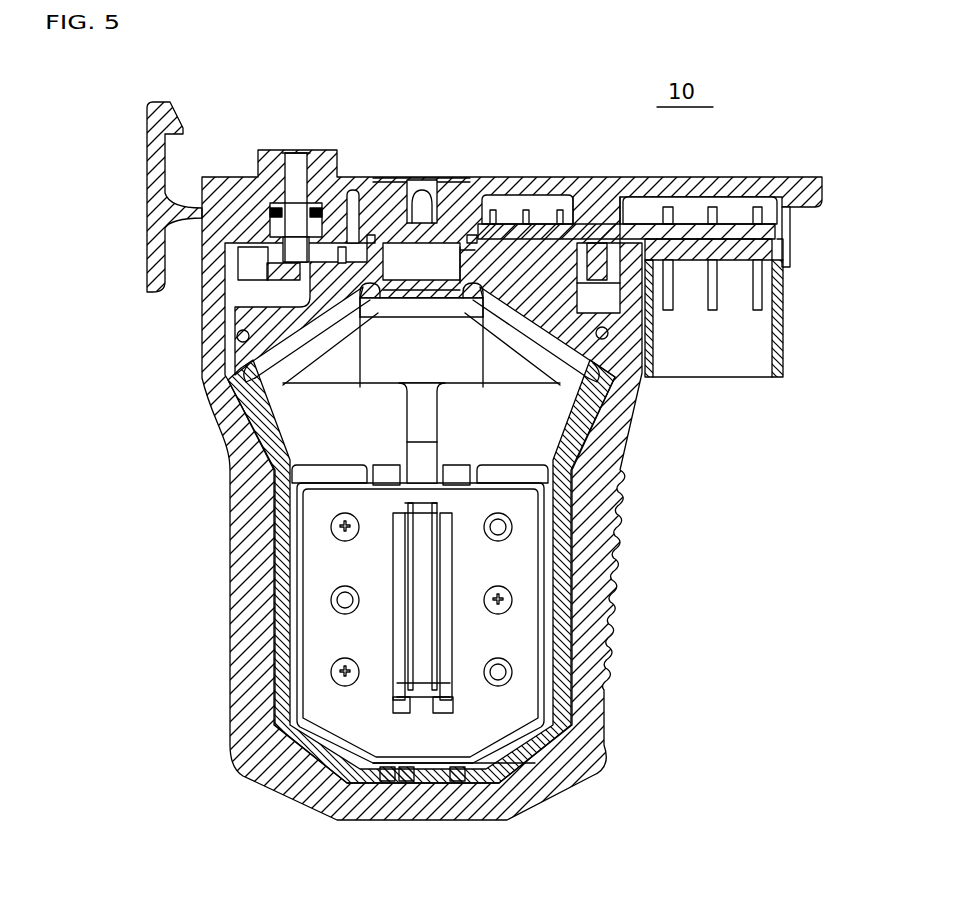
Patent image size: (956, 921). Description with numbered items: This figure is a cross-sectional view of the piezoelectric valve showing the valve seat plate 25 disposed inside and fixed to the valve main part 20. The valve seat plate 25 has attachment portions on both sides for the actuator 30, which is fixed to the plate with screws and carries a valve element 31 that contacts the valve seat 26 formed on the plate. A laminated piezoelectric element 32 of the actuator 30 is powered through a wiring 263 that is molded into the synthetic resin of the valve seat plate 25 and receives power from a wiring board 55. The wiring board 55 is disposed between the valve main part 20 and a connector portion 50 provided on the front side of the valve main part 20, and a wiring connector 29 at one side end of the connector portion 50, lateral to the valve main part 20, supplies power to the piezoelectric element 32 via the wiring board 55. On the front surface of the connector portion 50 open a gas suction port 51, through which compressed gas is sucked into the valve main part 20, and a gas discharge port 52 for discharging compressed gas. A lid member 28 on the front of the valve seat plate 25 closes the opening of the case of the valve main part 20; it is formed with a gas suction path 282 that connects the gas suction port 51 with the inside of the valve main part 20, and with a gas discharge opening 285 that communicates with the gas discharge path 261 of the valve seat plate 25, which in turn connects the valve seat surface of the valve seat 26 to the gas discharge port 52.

The valve main part 20 is at (250, 532).
The valve seat plate 25 is at (250, 347).
The valve seat 26 is at (445, 263).
The lid member 28 is at (583, 240).
The wiring connector 29 is at (780, 308).
The actuator 30 is at (320, 633).
The valve element 31 is at (403, 303).
The laminated piezoelectric element 32 is at (423, 635).
The connector portion 50 is at (732, 185).
The gas suction port 51 is at (295, 150).
The gas discharge port 52 is at (427, 243).
The wiring board 55 is at (643, 232).
The gas discharge path 261 is at (465, 290).
The wiring 263 is at (527, 213).
The gas suction path 282 is at (297, 230).
The gas discharge opening 285 is at (430, 293).